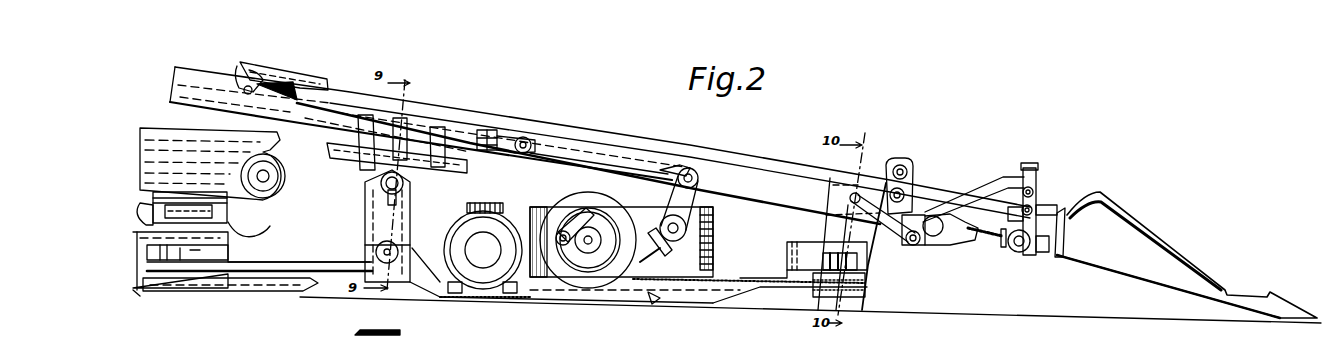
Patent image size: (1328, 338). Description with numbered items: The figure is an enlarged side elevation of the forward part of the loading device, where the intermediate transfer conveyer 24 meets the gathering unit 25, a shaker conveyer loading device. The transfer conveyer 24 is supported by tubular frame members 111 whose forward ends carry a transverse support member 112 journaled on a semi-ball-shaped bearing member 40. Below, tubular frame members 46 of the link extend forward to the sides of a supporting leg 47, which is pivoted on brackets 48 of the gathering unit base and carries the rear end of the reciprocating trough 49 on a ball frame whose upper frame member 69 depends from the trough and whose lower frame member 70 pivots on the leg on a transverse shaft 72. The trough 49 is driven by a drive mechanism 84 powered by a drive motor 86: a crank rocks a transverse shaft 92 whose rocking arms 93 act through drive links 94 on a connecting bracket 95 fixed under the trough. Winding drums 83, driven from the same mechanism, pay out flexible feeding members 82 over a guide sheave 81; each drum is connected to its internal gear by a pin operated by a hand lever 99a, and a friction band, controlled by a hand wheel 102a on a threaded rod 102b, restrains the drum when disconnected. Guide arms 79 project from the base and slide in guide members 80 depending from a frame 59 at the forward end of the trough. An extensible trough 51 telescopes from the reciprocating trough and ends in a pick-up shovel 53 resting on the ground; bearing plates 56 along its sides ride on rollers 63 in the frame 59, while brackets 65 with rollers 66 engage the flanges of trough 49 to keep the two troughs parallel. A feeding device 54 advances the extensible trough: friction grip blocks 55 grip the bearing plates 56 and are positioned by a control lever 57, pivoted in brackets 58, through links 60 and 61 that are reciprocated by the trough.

The reciprocating trough 49 is at (211, 67).
The bearing plates 56 is at (782, 160).
The brackets 65 is at (265, 66).
The rollers 66 is at (241, 70).
The upper frame member 69 is at (330, 124).
The lower frame member 70 is at (372, 171).
The intermediate transfer conveyer 24 is at (168, 129).
The tubular frame members 111 is at (215, 207).
The semi-ball-shaped bearing member 40 is at (232, 219).
The transverse support member 112 is at (262, 228).
The tubular frame members 46 is at (286, 263).
The supporting leg 47 is at (365, 226).
The transverse shaft 72 is at (375, 192).
The brackets 48 is at (408, 256).
The drive motor 86 is at (461, 226).
The winding drums 83 is at (560, 195).
The hand lever 99a is at (585, 205).
The hand wheel 102a is at (667, 249).
The threaded rod 102b is at (657, 307).
The drive mechanism 84 is at (710, 246).
The transverse shaft 92 is at (666, 198).
The drive links 94 is at (622, 150).
The connecting bracket 95 is at (497, 162).
The gathering unit 25 is at (554, 114).
The extensible trough 51 is at (689, 136).
The rocking arms 93 is at (705, 196).
The guide arms 79 is at (785, 248).
The flexible feeding members 82 is at (653, 286).
The guide sheave 81 is at (868, 290).
The guide members 80 is at (874, 242).
The control lever 57 is at (858, 192).
The frame 59 is at (900, 158).
The rollers 63 is at (916, 160).
The brackets 58 is at (934, 248).
The link 60 is at (984, 182).
The feeding device 54 is at (1022, 178).
The link 61 is at (1008, 252).
The friction grip blocks 55 is at (1045, 195).
The pick-up member or shovel 53 is at (1178, 252).